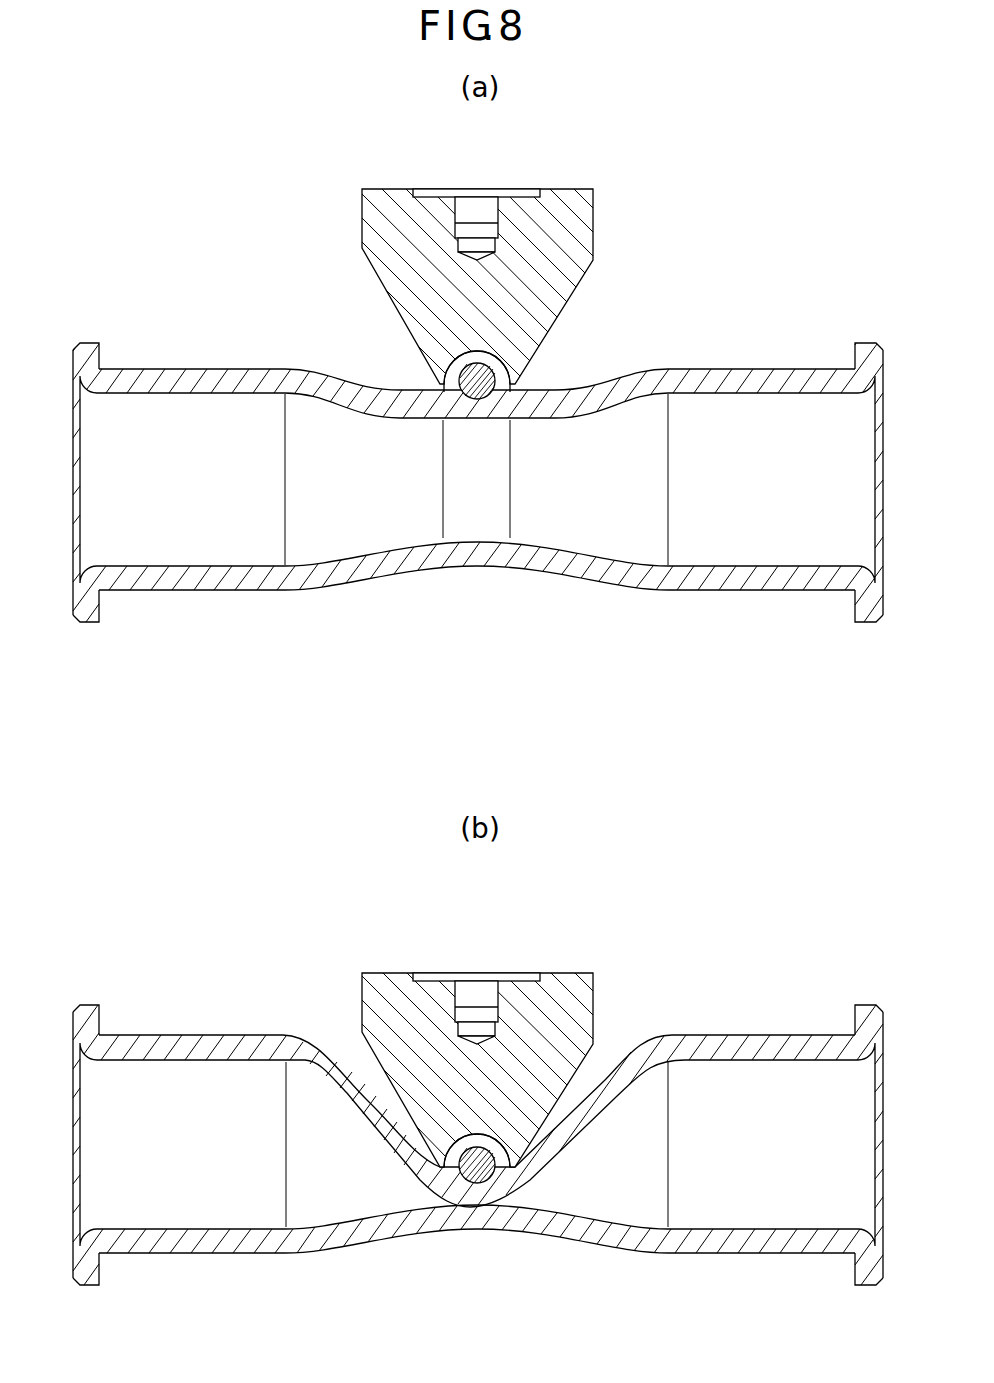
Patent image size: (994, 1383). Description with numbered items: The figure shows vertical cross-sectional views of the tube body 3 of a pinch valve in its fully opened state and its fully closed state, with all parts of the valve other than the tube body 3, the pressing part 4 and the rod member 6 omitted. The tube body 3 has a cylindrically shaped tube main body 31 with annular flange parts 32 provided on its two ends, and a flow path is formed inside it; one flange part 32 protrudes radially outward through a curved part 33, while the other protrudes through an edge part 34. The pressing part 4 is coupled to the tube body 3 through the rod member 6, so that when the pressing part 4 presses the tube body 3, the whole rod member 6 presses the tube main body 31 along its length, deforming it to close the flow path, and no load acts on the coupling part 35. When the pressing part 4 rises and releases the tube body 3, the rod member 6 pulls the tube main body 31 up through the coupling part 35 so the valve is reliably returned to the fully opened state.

The tube body 3 is at (476, 734).
The pressing part 4 is at (402, 237).
The rod member 6 is at (467, 367).
The tube main body 31 is at (560, 573).
The flange part 32 is at (88, 340).
The curved part 33 is at (88, 382).
The edge part 34 is at (868, 390).
The coupling part 35 is at (494, 361).